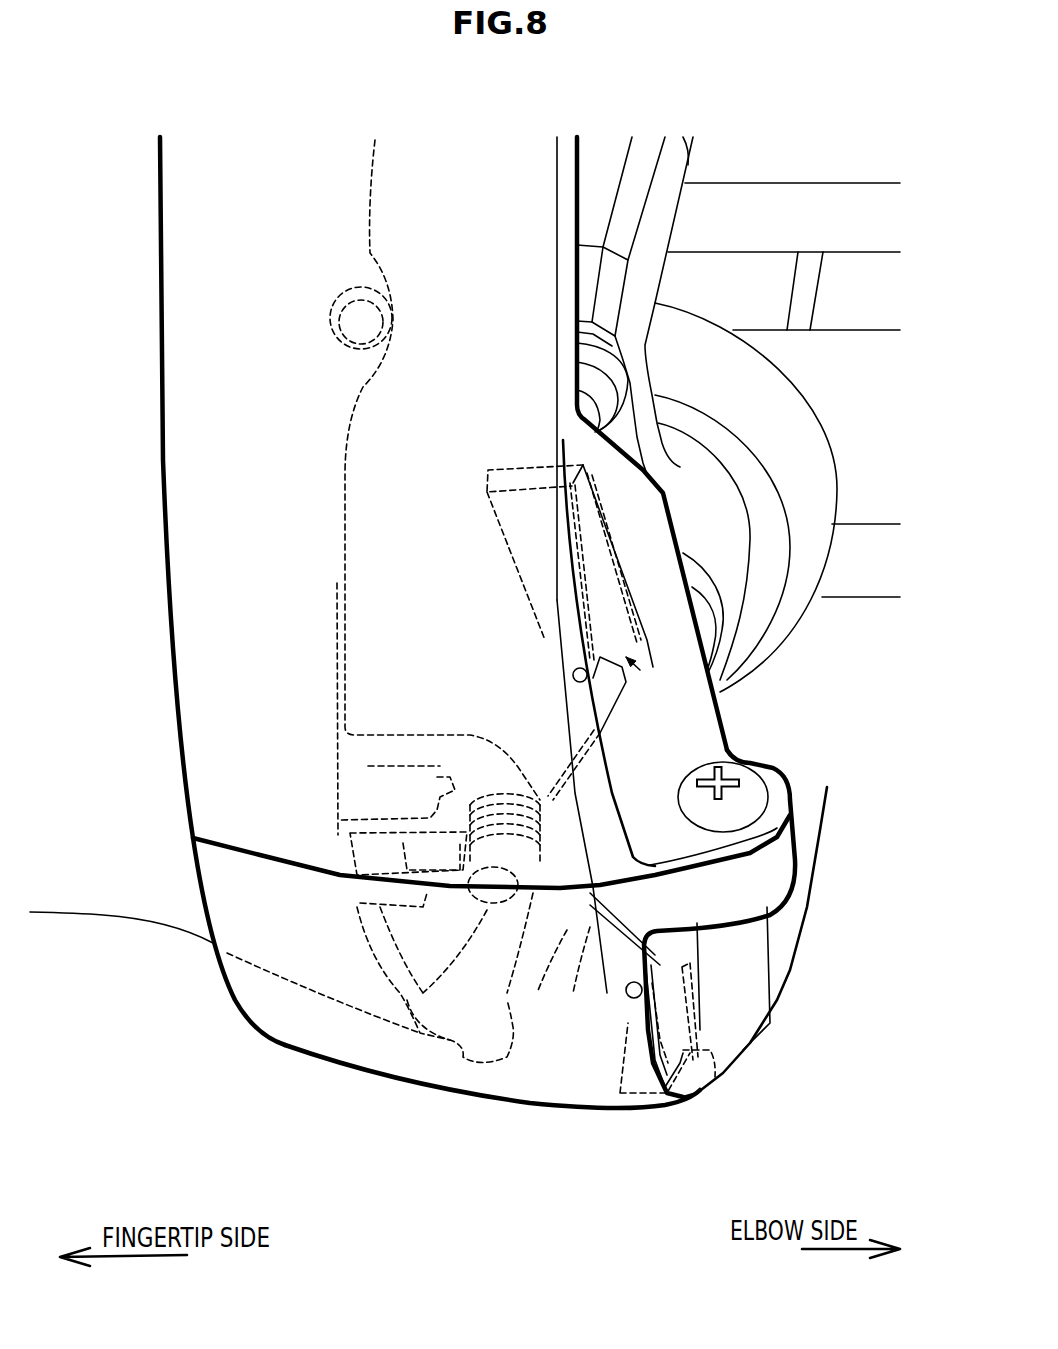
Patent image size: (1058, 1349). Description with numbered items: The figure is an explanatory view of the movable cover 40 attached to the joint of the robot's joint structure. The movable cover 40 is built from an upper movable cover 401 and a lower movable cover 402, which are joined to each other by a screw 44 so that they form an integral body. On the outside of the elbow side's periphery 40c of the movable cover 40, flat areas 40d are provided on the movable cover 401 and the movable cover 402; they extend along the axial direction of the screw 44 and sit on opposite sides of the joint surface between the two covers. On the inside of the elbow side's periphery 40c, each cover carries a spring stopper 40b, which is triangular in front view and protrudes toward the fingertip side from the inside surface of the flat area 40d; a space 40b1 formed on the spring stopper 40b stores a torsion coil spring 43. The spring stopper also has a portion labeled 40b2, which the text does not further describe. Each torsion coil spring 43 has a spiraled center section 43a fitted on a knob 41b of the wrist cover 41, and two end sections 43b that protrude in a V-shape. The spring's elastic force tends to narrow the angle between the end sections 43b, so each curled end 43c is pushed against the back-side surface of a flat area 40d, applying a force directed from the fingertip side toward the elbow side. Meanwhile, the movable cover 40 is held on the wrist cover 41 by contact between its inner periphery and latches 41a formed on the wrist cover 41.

The movable cover 40 is at (103, 745).
The movable cover 401 is at (222, 770).
The movable cover 402 is at (222, 870).
The wrist cover 41 is at (97, 920).
The latch 41a is at (347, 330).
The knob 41b is at (400, 1013).
The elbow side's periphery 40c is at (588, 267).
The flat area 40d is at (580, 440).
The spring stopper 40b is at (570, 600).
The space 40b1 is at (640, 670).
The guide rail end portion 40b2 is at (488, 470).
The torsion coil spring 43 is at (573, 760).
The center section 43a is at (472, 795).
The end section 43b is at (608, 657).
The curled end 43c is at (577, 692).
The screw 44 is at (762, 785).